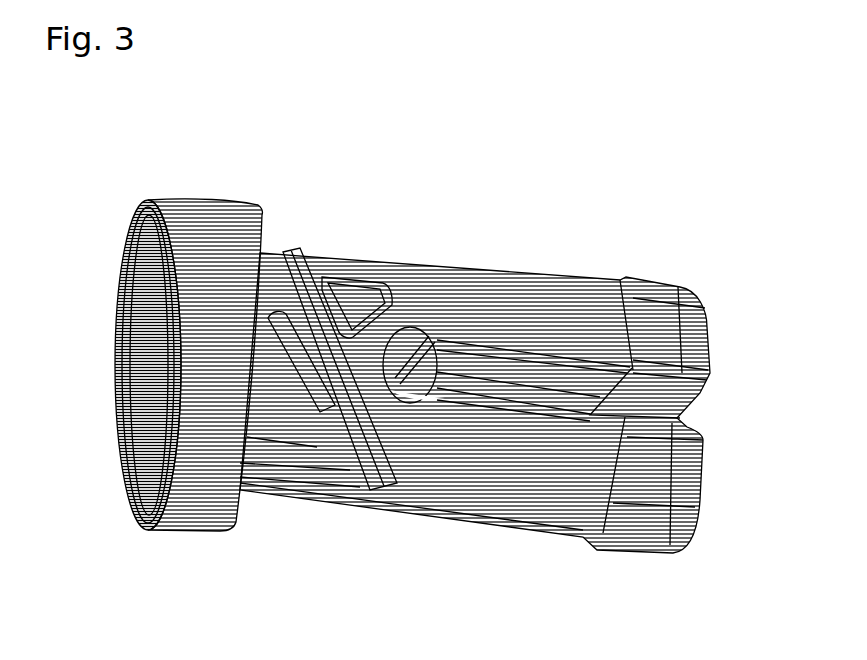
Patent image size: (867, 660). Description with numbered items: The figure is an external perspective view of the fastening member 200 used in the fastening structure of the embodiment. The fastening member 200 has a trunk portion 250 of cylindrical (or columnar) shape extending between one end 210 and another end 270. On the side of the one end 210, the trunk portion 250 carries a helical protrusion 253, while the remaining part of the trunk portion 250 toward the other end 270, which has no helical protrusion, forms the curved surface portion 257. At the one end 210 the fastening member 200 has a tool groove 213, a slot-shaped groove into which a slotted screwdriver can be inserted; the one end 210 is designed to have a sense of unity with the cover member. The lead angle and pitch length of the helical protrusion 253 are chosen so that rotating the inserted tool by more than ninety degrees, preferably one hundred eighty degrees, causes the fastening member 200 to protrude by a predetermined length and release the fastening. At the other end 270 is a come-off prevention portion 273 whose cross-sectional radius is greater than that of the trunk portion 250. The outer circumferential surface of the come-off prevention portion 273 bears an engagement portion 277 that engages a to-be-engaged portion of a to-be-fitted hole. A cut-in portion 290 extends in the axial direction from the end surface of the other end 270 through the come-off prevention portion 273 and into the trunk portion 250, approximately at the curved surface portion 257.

The fastening member 200 is at (602, 162).
The one end 210 is at (210, 203).
The tool groove 213 is at (120, 383).
The trunk portion 250 is at (618, 240).
The helical protrusion 253 is at (340, 415).
The curved surface portion 257 is at (580, 540).
The other end 270 is at (652, 282).
The come-off prevention portion 273 is at (682, 295).
The engagement portion 277 is at (620, 557).
The cut-in portion 290 is at (687, 413).